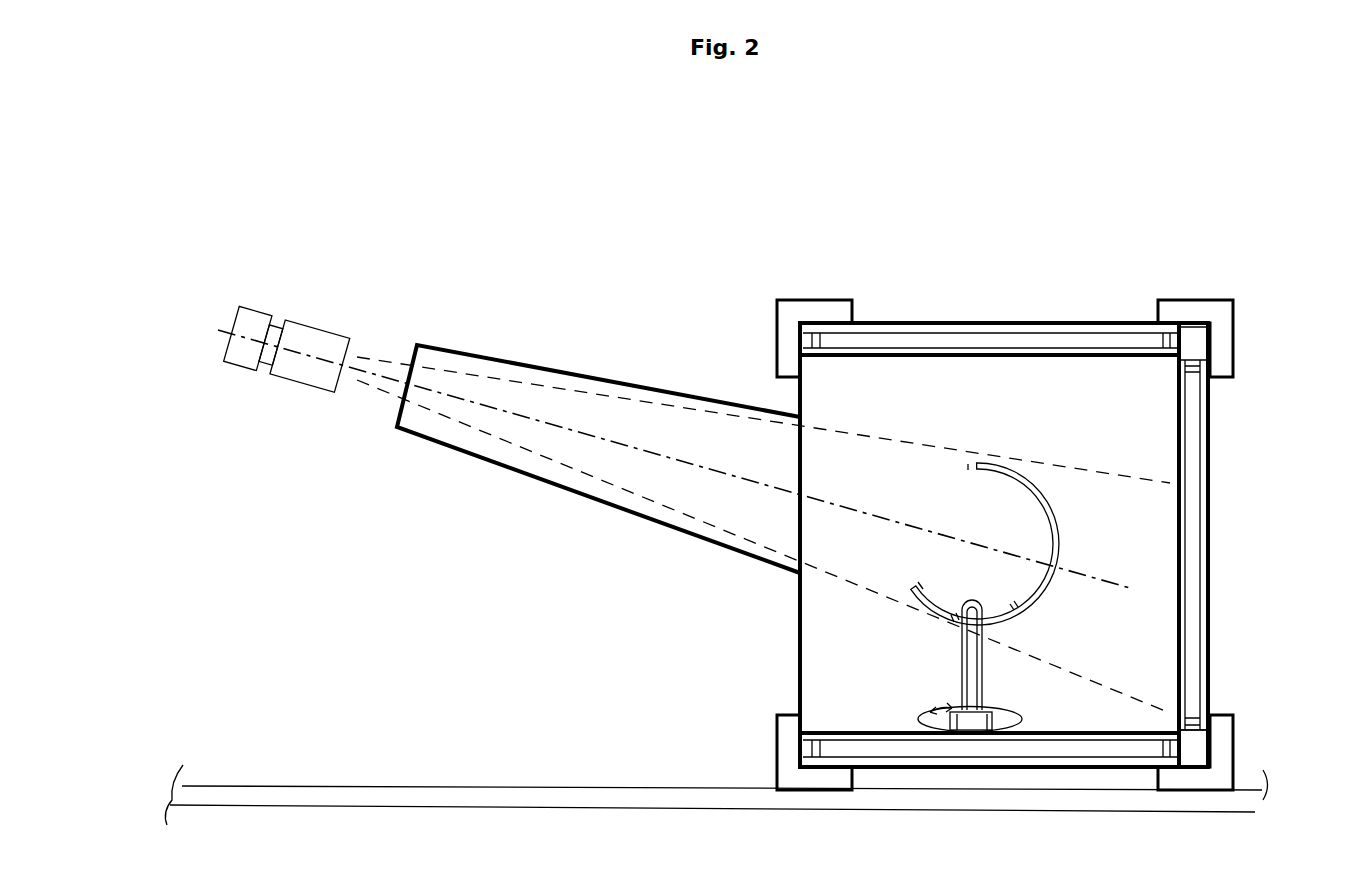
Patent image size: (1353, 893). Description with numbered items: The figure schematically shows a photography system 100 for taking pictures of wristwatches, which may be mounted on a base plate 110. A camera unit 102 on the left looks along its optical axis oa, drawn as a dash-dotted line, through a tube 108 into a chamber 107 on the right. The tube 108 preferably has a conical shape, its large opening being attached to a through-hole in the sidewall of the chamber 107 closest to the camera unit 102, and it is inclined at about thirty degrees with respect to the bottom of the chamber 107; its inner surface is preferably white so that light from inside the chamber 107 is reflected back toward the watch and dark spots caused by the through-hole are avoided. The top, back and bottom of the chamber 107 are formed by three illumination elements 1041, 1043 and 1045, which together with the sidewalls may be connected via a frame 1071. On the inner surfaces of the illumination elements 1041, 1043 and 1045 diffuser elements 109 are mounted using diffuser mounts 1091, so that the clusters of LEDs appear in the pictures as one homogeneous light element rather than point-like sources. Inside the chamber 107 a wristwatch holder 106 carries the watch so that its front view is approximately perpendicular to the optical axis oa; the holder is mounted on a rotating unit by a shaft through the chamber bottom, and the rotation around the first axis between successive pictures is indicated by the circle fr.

The photography system 100 is at (1240, 195).
The camera unit 102 is at (252, 308).
The wristwatch holder 106 is at (955, 655).
The chamber 107 is at (1062, 313).
The tube 108 is at (608, 380).
The diffuser element 109 is at (929, 345).
The base plate 110 is at (553, 785).
The illumination element 1041 is at (905, 323).
The illumination element 1043 is at (1210, 487).
The illumination element 1045 is at (1022, 770).
The frame 1071 is at (1208, 300).
The diffuser mount 1091 is at (1197, 717).
The optical axis oa is at (500, 412).
The rotation around the first axis fr is at (982, 717).